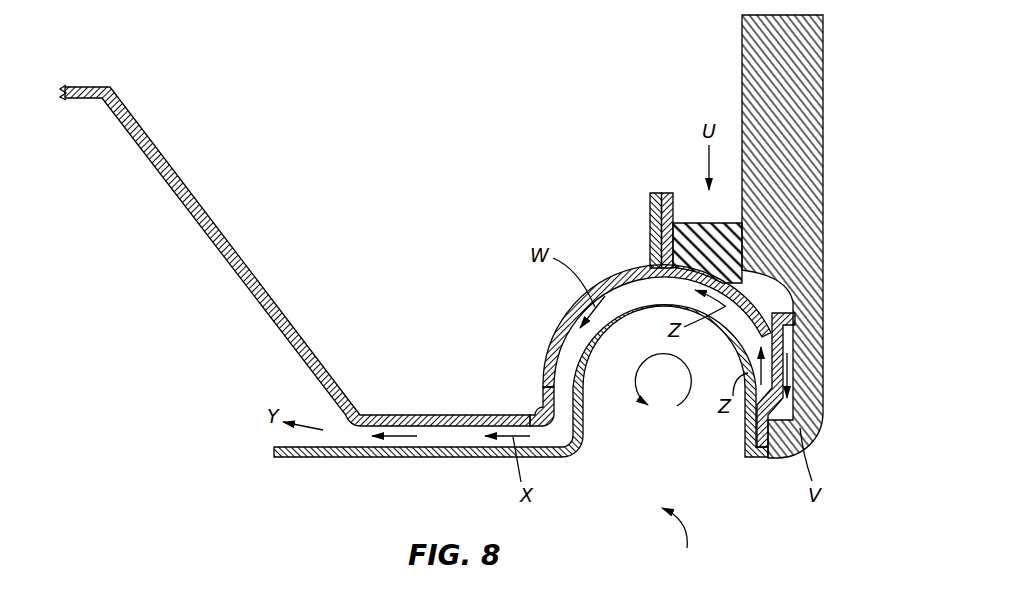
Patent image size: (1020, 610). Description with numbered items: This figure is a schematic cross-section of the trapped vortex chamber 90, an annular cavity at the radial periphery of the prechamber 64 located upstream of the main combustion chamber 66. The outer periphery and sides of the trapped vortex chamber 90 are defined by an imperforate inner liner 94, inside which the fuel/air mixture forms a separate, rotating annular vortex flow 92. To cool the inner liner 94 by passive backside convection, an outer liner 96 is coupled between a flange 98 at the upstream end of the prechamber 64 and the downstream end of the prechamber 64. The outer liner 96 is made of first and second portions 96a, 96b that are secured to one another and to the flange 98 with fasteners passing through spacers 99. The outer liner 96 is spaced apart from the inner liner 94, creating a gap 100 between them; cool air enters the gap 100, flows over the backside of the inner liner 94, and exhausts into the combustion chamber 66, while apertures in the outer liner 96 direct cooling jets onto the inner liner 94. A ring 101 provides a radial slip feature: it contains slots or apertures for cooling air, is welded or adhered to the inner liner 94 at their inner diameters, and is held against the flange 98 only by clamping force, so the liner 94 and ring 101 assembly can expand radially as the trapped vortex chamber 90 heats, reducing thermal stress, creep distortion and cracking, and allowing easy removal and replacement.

The prechamber 64 is at (681, 540).
The combustion chamber 66 is at (170, 303).
The trapped vortex chamber 90 is at (398, 135).
The vortex flow 92 is at (692, 388).
The liner 94 is at (590, 382).
The outer liner 96 is at (609, 252).
The first portion of outer liner 96a is at (543, 378).
The second portion of outer liner 96b is at (680, 195).
The flange 98 is at (824, 105).
The spacer 99 is at (721, 221).
The gap 100 is at (551, 349).
The ring 101 is at (787, 371).